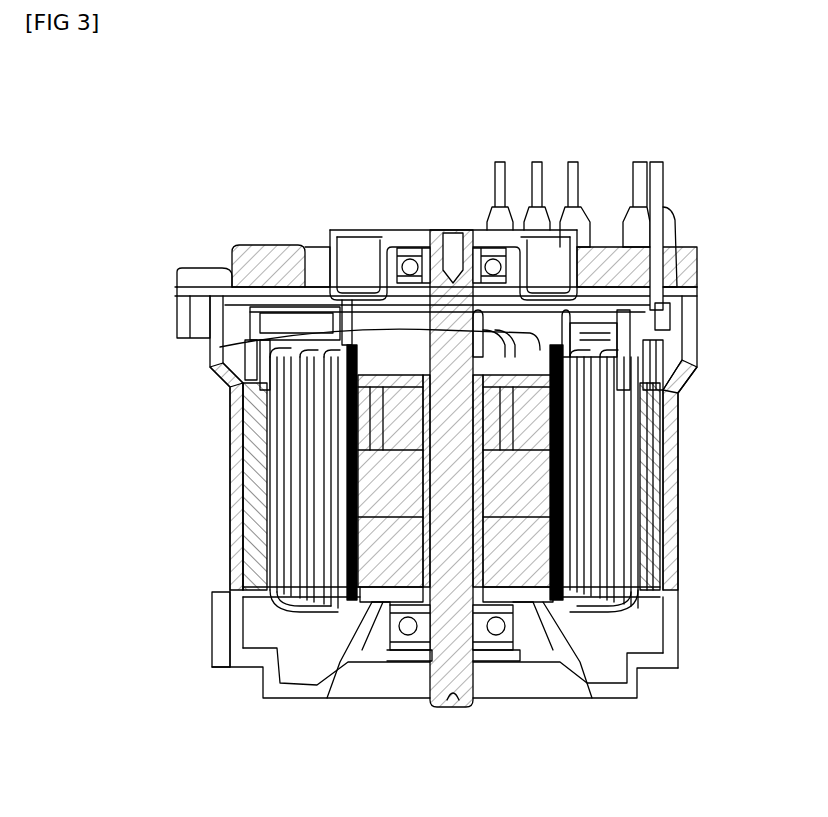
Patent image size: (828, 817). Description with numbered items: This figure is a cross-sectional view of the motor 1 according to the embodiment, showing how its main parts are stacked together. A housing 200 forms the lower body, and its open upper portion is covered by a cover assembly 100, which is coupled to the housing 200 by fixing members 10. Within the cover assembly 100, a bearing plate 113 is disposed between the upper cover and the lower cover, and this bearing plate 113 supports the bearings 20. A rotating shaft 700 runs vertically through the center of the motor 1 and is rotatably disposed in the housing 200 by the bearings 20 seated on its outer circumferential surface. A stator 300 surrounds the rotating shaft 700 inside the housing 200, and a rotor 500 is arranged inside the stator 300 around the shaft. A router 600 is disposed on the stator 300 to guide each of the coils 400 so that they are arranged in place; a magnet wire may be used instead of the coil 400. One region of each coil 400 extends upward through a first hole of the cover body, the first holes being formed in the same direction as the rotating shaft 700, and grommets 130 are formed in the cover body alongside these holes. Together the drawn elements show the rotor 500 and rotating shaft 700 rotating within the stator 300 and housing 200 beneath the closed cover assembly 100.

The motor 1 is at (149, 101).
The fixing member 10 is at (190, 273).
The bearing 20 is at (431, 238).
The cover assembly 100 is at (238, 228).
The bearing plate 113 is at (337, 238).
The grommet 130 is at (596, 200).
The housing 200 is at (228, 645).
The stator 300 is at (660, 604).
The coil 400 is at (573, 160).
The rotor 500 is at (515, 548).
The router 600 is at (248, 320).
The rotating shaft 700 is at (461, 693).